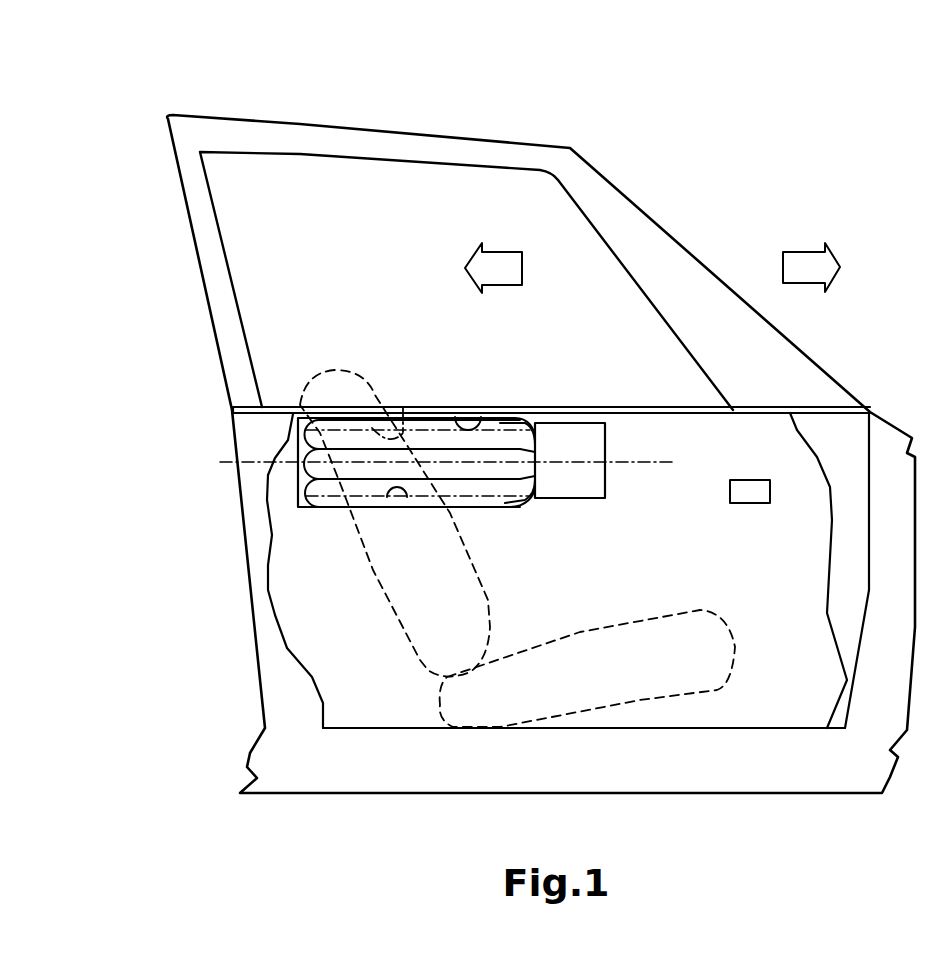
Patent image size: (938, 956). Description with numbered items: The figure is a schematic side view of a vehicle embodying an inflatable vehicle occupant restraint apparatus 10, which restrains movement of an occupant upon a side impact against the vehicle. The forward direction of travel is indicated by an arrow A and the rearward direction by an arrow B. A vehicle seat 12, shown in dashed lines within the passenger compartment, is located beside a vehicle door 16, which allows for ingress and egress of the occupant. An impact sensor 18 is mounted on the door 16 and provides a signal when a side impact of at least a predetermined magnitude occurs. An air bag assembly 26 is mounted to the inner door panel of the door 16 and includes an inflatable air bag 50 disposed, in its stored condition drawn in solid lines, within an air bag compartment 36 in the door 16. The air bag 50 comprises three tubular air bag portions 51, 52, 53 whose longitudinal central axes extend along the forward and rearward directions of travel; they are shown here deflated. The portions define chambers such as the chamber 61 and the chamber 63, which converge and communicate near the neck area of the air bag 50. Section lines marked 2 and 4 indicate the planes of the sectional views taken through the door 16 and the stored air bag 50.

The inflatable vehicle occupant restraint apparatus 10 is at (666, 174).
The vehicle seat 12 is at (375, 567).
The vehicle door 16 is at (380, 143).
The impact sensor 18 is at (752, 503).
The air bag assembly 26 is at (276, 432).
The air bag compartment 36 is at (485, 420).
The inflatable air bag 50 is at (306, 510).
The air bag portion 51 is at (540, 416).
The air bag portion 52 is at (540, 482).
The air bag portion 53 is at (485, 507).
The chamber 61 is at (404, 400).
The chamber 63 is at (405, 507).
The section line 2- 2 is at (152, 133).
The section line 4- 4 is at (222, 437).
The arrow A is at (832, 265).
The arrow B is at (471, 272).